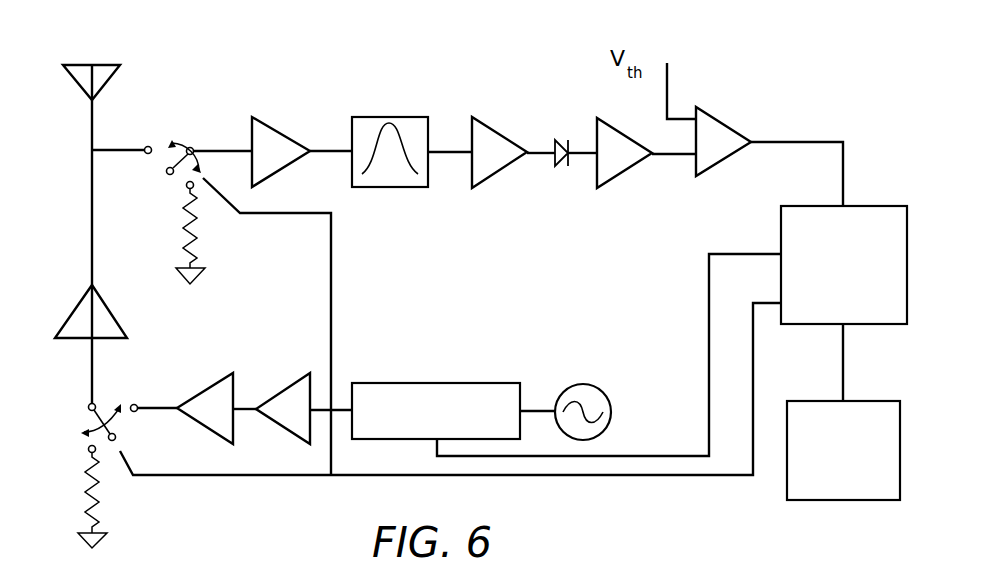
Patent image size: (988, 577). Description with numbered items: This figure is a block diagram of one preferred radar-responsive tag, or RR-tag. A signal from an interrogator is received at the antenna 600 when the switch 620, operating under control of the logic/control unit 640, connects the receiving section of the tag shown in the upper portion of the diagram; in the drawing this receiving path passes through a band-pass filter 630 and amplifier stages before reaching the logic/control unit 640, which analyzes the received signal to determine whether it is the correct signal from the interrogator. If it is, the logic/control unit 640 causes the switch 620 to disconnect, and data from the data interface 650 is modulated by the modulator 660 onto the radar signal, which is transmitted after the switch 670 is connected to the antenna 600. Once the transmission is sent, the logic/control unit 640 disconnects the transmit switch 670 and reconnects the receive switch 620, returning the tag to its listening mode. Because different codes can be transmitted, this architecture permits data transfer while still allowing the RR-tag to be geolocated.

The antenna 600 is at (92, 68).
The switch 620 is at (175, 132).
The band-pass filter 630 is at (390, 139).
The logic/control unit 640 is at (904, 232).
The data interface 650 is at (898, 428).
The modulator 660 is at (517, 409).
The transmit switch 670 is at (88, 414).